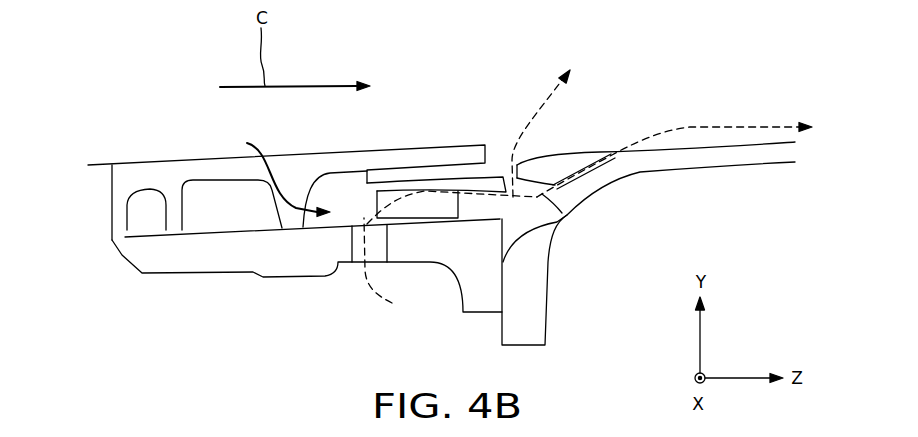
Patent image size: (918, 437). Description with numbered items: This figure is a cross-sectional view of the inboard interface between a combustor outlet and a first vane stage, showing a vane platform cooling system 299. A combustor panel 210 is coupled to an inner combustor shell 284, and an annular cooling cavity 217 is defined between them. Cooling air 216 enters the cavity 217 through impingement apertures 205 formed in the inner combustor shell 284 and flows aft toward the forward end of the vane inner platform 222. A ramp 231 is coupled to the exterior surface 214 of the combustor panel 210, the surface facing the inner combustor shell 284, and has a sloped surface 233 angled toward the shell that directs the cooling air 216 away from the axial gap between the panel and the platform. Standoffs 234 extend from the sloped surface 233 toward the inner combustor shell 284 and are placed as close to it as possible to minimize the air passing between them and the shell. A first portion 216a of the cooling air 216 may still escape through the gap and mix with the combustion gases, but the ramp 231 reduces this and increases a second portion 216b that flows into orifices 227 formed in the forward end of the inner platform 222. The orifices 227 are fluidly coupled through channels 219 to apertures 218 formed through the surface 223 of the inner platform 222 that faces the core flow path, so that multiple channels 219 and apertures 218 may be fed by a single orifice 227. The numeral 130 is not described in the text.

The vane platform cooling system 299 is at (170, 68).
The combustor panel 210 is at (193, 175).
The exterior surface 214 is at (351, 174).
The annular cooling cavity 217 is at (279, 167).
The ramp 231 is at (463, 178).
The sloped surface 233 is at (467, 190).
The standoffs 234 is at (421, 207).
The inner combustor shell 284 is at (181, 262).
The impingement apertures 205 is at (355, 277).
The cooling air 216 is at (395, 303).
The first portion of cooling air 216a is at (562, 62).
The second portion of cooling air 216b is at (778, 127).
The gap 130 is at (498, 139).
The surface 223 is at (725, 148).
The apertures 218 is at (619, 139).
The channels 219 is at (610, 177).
The vane inner platform 222 is at (774, 160).
The orifices 227 is at (540, 232).